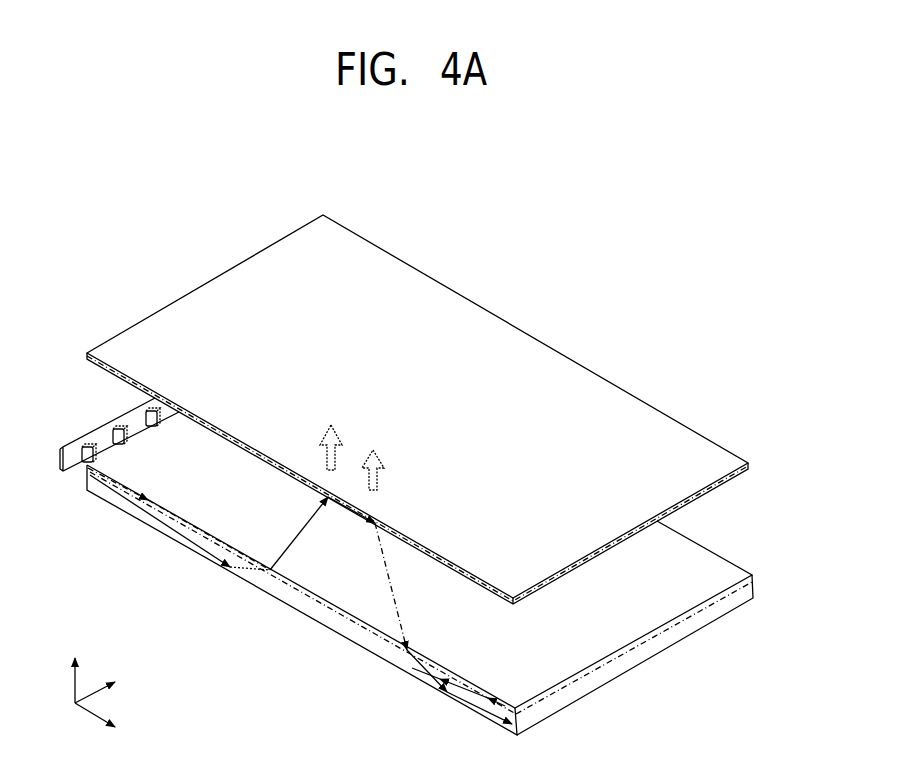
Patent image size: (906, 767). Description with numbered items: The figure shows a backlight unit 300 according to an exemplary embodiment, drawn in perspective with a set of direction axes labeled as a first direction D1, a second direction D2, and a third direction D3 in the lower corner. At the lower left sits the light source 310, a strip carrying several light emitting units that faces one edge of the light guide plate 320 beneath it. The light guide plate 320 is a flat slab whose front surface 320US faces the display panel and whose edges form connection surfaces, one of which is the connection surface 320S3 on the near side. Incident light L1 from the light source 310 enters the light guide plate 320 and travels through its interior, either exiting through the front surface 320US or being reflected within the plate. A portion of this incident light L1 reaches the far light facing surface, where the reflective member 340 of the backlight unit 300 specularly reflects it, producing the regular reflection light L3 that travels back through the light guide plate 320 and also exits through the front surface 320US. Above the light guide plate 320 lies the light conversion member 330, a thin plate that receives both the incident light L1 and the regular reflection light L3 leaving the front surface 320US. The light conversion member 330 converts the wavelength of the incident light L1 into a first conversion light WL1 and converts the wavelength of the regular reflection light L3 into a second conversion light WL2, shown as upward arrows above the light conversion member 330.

The backlight unit 300 is at (612, 246).
The light source 310 is at (85, 435).
The light guide plate 320 is at (660, 600).
The front surface 320US is at (703, 567).
The connection surface 320S3 is at (280, 590).
The light conversion member 330 is at (625, 407).
The reflective member 340 is at (628, 658).
The incident light L1 is at (117, 485).
The regular reflection light L3 is at (422, 670).
The first conversion light WL1 is at (337, 434).
The second conversion light WL2 is at (379, 457).
The first direction D1 is at (110, 722).
The second direction D2 is at (110, 687).
The third direction D3 is at (78, 670).